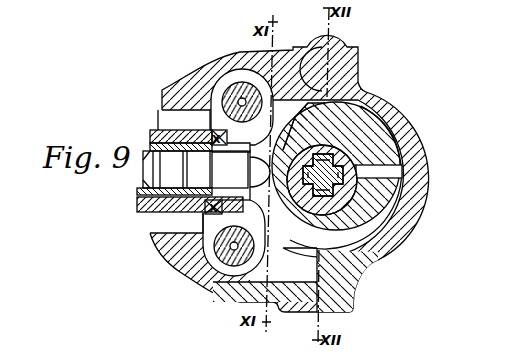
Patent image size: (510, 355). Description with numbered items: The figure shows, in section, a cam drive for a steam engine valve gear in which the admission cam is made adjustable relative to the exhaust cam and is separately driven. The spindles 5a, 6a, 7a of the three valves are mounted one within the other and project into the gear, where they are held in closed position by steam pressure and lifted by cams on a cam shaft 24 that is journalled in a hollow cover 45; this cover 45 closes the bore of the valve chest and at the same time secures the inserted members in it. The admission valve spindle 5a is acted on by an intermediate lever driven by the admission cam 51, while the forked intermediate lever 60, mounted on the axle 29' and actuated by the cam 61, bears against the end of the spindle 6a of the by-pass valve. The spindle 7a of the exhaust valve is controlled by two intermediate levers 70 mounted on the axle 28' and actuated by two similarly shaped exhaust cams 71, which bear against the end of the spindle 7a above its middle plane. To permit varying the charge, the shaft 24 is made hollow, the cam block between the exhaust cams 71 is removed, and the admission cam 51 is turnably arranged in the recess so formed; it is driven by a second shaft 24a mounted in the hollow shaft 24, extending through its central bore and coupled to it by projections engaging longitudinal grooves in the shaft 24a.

The admission cam 51 is at (367, 101).
The cam shaft 24 is at (392, 132).
The second shaft 24a is at (395, 169).
The axle 28' is at (235, 73).
The axle 29' is at (214, 261).
The spindle of the by-pass valve 6a is at (150, 142).
The admission valve spindle 5a is at (150, 174).
The spindle of the exhaust valve 7a is at (150, 209).
The intermediate levers 70 is at (274, 112).
The exhaust cams 71 is at (289, 175).
The intermediate lever 60 is at (264, 242).
The cam 61 is at (299, 240).
The hollow cover 45 is at (235, 298).